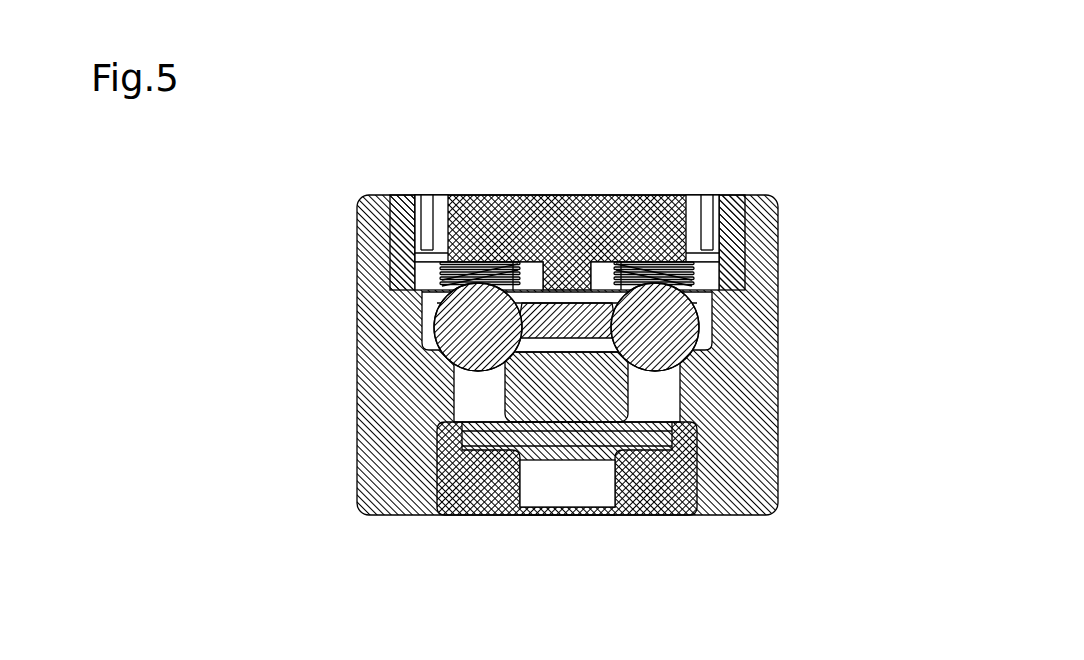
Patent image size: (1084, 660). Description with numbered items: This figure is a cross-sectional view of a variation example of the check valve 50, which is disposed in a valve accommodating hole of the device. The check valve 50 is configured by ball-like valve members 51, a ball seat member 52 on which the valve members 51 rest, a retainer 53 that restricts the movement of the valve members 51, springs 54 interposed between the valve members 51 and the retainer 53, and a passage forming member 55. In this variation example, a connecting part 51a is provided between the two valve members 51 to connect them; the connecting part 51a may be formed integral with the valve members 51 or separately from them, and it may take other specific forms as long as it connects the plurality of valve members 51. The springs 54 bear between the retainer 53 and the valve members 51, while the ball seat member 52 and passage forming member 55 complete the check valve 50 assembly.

The check valve 50 is at (333, 173).
The valve members 51 is at (478, 327).
The connecting part 51a is at (690, 284).
The ball seat member 52 is at (743, 415).
The retainer 53 is at (600, 195).
The springs 54 is at (440, 278).
The passage forming member 55 is at (657, 490).